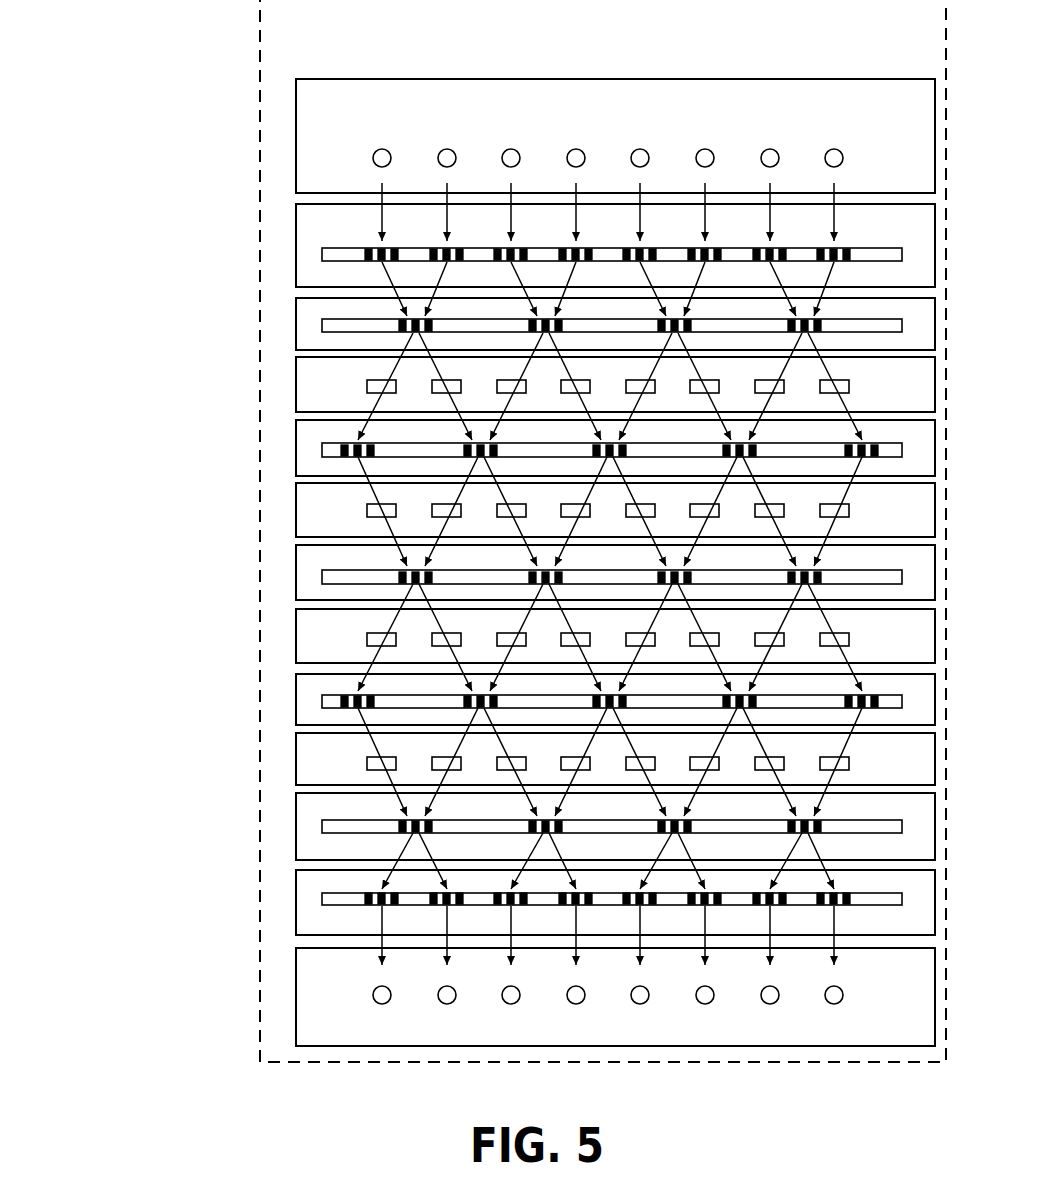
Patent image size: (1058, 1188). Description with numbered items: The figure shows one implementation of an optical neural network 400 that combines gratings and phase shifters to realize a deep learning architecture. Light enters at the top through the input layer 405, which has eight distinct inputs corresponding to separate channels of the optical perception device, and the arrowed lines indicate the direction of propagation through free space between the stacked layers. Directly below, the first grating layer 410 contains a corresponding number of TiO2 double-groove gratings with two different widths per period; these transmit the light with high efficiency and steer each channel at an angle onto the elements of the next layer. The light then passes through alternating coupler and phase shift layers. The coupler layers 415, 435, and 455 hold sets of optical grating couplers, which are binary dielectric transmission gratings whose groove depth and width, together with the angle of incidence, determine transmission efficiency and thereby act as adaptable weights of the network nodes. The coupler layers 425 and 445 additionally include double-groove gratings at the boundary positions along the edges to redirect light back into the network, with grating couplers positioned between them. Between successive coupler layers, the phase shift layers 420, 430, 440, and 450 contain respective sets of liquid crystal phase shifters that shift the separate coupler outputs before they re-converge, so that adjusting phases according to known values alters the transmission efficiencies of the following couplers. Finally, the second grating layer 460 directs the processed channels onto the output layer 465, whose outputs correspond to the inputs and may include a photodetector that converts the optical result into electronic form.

The optical neural network 400 is at (621, 62).
The input layer 405 is at (296, 138).
The first grating layer 410 is at (296, 250).
The coupler layer 415 is at (296, 325).
The phase shift layer 420 is at (296, 390).
The coupler layer 425 is at (296, 458).
The phase shift layer 430 is at (296, 520).
The coupler layer 435 is at (296, 585).
The phase shift layer 440 is at (296, 650).
The coupler layer 445 is at (296, 710).
The phase shift layer 450 is at (296, 770).
The coupler layer 455 is at (296, 835).
The second grating layer 460 is at (296, 905).
The output layer 465 is at (296, 1002).